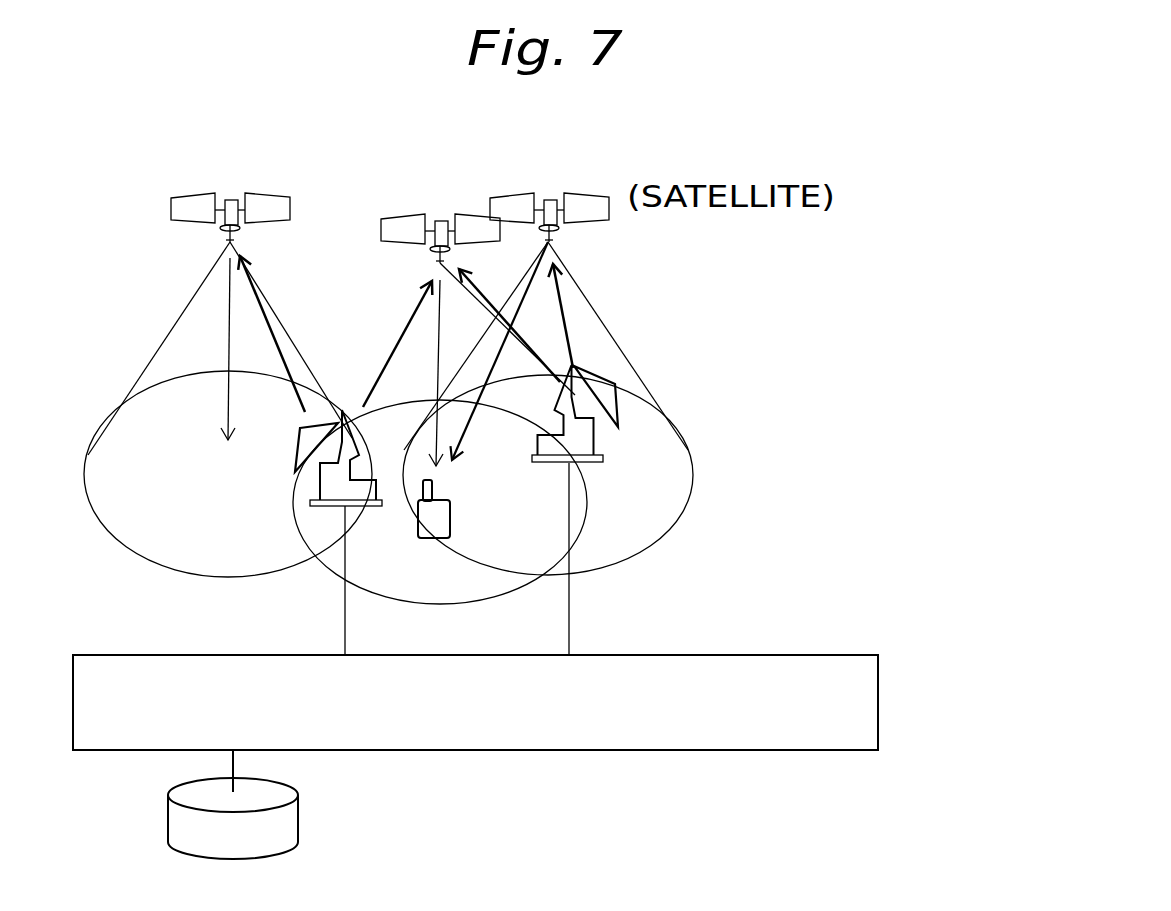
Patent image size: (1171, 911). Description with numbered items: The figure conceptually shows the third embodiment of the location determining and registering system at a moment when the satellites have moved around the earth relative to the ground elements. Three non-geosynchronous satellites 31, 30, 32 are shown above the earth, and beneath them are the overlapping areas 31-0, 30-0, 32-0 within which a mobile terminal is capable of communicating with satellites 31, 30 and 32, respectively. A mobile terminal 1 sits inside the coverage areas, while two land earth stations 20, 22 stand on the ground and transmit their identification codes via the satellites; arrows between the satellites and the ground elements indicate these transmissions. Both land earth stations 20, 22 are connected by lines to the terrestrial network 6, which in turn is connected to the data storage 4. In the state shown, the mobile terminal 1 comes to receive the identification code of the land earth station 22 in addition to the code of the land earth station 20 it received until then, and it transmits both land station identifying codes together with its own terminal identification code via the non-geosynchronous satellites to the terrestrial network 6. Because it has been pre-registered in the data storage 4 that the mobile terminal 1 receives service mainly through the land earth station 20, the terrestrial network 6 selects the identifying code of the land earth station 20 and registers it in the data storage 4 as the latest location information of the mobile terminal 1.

The non-geosynchronous satellite 31 is at (205, 196).
The non-geosynchronous satellite 30 is at (421, 217).
The non-geosynchronous satellite 32 is at (533, 192).
The spot beam coverage area 31-0 is at (228, 474).
The spot beam coverage area 30-0 is at (440, 502).
The spot beam coverage area 32-0 is at (693, 495).
The land earth station 20 is at (310, 483).
The land earth station 22 is at (617, 408).
The mobile terminal 1 is at (450, 526).
The terrestrial network 6 is at (102, 655).
The data storage 4 is at (296, 818).